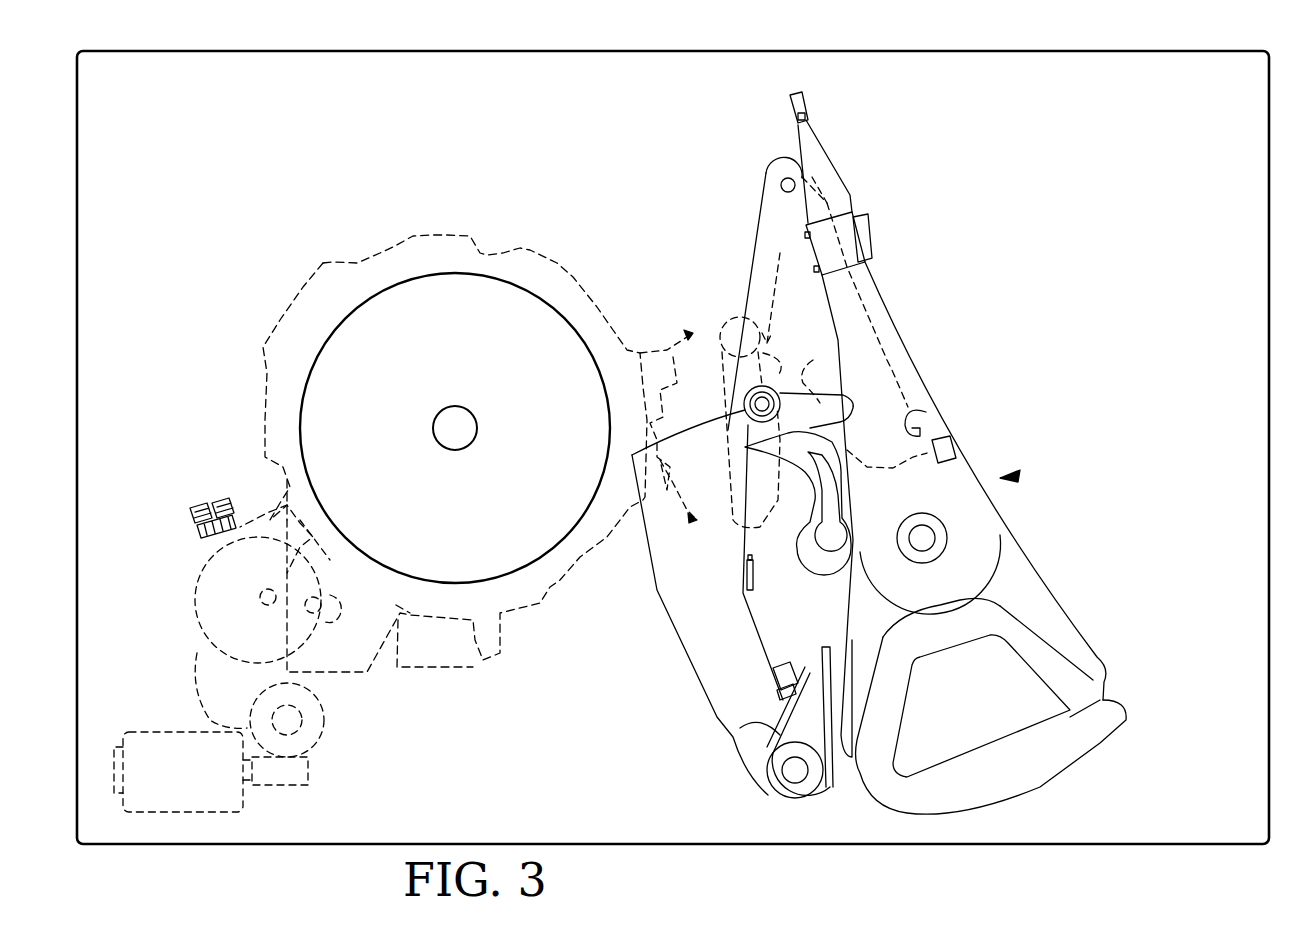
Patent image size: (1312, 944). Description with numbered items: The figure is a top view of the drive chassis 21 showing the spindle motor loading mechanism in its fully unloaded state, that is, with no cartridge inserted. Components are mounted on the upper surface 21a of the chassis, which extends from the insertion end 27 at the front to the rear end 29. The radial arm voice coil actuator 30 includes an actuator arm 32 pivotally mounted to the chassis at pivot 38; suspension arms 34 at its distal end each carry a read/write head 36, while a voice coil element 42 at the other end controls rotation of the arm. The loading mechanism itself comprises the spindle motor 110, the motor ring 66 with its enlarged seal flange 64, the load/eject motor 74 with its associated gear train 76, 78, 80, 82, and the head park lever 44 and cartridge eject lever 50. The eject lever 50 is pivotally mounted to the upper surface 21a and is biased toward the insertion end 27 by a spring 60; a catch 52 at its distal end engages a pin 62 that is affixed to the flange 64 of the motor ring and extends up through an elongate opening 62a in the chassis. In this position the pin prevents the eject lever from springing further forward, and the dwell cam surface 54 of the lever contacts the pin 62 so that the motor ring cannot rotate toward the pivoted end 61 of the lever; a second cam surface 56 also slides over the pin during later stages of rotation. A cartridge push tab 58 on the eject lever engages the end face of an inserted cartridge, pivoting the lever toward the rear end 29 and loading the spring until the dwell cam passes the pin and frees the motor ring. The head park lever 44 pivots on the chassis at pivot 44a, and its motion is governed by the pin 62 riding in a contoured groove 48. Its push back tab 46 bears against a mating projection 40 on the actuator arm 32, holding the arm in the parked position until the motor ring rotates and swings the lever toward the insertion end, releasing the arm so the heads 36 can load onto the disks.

The drive chassis 21 is at (985, 845).
The upper surface of the drive chassis 21a is at (1236, 660).
The insertion end 27 is at (77, 195).
The rear end 29 is at (1270, 198).
The radial arm voice coil actuator 30 is at (1000, 478).
The actuator arm 32 is at (895, 322).
The suspension arms 34 is at (838, 160).
The read/write head 36 is at (808, 95).
The pivot of actuator arm 38 is at (927, 540).
The mating projection 40 is at (953, 445).
The voice coil element 42 is at (1043, 645).
The head park lever 44 is at (757, 222).
The pivot of head park lever 44a is at (783, 165).
The push back tab 46 is at (925, 413).
The contoured groove 48 is at (799, 484).
The cartridge eject lever 50 is at (700, 635).
The catch 52 is at (772, 385).
The dwell cam surface 54 is at (665, 437).
The second cam surface 56 is at (655, 545).
The cartridge push tab 58 is at (753, 580).
The spring 60 is at (767, 723).
The pivoted end of eject lever 61 is at (803, 778).
The pin 62 is at (735, 383).
The elongate opening 62a is at (780, 291).
The enlarged seal flange 64 is at (652, 350).
The motor ring 66 is at (552, 585).
The load/eject motor 74 is at (155, 745).
The gear train element 76 is at (302, 775).
The gear train element 78 is at (322, 715).
The gear train element 80 is at (197, 692).
The gear train element 82 is at (205, 590).
The spindle motor 110 is at (392, 307).